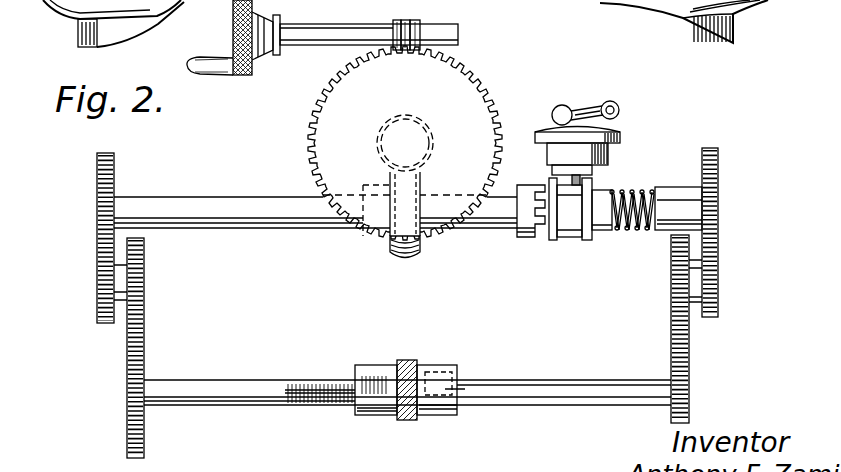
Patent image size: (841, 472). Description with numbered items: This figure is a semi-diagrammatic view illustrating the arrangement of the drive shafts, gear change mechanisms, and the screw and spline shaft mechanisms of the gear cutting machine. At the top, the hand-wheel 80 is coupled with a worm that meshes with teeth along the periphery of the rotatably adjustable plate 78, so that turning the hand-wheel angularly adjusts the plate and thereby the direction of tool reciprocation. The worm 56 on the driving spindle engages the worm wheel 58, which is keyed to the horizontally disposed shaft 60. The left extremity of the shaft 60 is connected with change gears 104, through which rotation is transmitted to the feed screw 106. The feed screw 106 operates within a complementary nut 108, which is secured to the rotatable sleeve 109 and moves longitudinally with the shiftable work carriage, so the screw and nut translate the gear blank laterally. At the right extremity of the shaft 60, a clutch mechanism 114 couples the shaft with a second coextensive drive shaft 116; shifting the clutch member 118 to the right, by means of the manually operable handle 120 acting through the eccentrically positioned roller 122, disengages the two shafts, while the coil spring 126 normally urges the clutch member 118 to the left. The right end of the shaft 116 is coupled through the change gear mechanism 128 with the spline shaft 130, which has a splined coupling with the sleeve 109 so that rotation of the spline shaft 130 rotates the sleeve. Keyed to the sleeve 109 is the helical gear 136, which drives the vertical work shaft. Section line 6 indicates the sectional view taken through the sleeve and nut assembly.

The hand-wheel 80 is at (425, 32).
The rotatably adjustable disc or plate 78 is at (447, 71).
The worm 56 is at (432, 122).
The worm wheel 58 is at (421, 246).
The shaft 60 is at (230, 204).
The change gears 104 is at (88, 471).
The change gear mechanism 128 is at (726, 425).
The clutch mechanism 114 is at (536, 248).
The clutch member 118 is at (572, 226).
The second coextensive drive shaft 116 is at (633, 226).
The coil spring 126 is at (638, 192).
The manually operable handle 120 is at (588, 108).
The eccentrically positioned roller 122 is at (575, 180).
The actuating or feed screw 106 is at (212, 386).
The section line 6 is at (316, 395).
The nut 108 is at (386, 410).
The helical gear 136 is at (407, 363).
The rotatable sleeve 109 is at (440, 372).
The spline shaft 130 is at (528, 383).